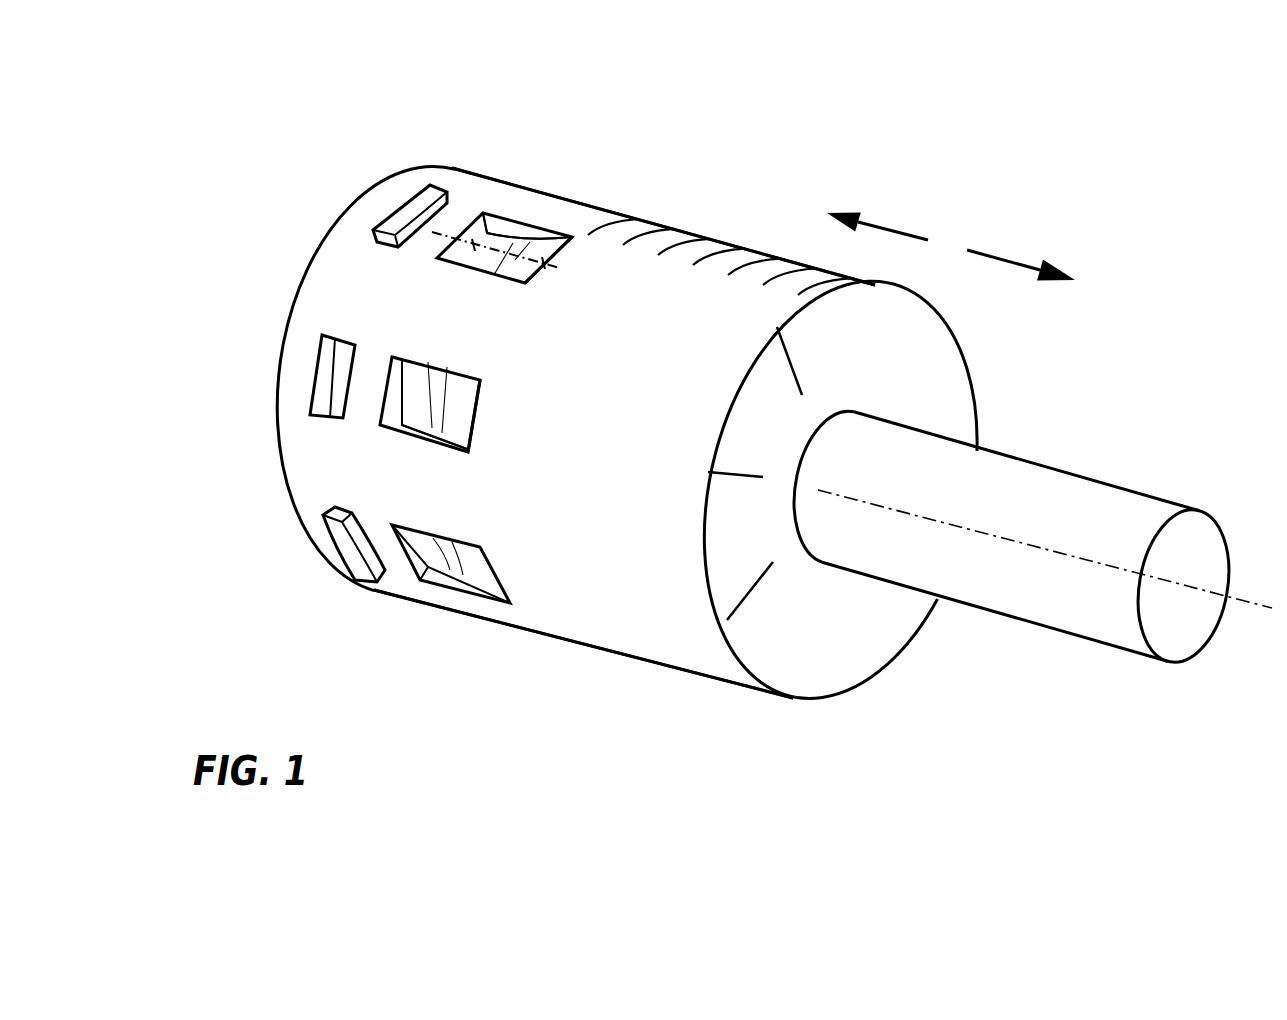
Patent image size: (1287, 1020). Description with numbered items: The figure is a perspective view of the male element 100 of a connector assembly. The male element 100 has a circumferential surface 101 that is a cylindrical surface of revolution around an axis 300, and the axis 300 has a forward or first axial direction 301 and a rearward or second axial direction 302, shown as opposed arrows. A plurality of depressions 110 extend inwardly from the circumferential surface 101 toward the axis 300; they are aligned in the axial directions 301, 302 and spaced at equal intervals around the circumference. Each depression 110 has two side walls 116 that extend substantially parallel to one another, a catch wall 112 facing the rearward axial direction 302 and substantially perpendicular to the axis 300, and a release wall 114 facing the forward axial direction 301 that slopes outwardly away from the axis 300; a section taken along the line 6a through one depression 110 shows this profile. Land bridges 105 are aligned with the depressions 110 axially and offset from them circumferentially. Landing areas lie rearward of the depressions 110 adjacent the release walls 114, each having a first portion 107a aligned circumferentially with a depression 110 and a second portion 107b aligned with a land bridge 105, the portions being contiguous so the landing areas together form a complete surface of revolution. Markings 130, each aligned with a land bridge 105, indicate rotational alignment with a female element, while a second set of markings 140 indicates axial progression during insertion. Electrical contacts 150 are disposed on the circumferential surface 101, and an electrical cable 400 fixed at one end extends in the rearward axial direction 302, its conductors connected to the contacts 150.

The male element 100 is at (298, 146).
The circumferential surface 101 is at (340, 263).
The land bridges 105 is at (468, 330).
The first portion of landing area 107a is at (719, 311).
The second portion of landing area 107b is at (676, 375).
The depressions 110 is at (499, 196).
The catch wall 112 is at (479, 228).
The release wall 114 is at (548, 247).
The side walls 116 is at (533, 238).
The markings 130 is at (752, 596).
The second set of markings 140 is at (740, 270).
The electrical contacts 150 is at (405, 205).
The section line 6a is at (421, 247).
The axis 300 is at (1012, 540).
The first axial direction 301 is at (888, 227).
The second axial direction 302 is at (995, 255).
The electrical cable 400 is at (1098, 510).